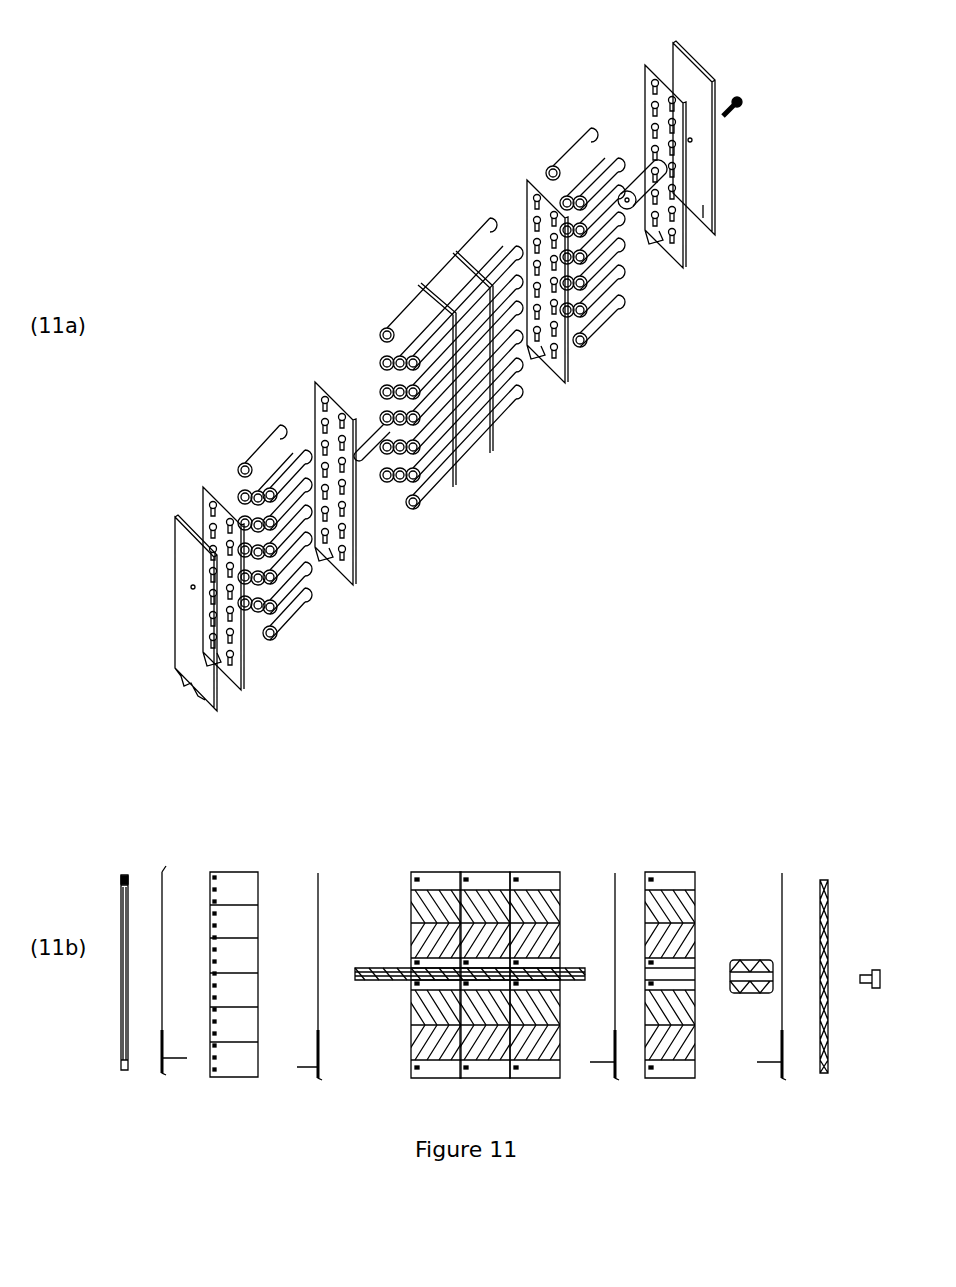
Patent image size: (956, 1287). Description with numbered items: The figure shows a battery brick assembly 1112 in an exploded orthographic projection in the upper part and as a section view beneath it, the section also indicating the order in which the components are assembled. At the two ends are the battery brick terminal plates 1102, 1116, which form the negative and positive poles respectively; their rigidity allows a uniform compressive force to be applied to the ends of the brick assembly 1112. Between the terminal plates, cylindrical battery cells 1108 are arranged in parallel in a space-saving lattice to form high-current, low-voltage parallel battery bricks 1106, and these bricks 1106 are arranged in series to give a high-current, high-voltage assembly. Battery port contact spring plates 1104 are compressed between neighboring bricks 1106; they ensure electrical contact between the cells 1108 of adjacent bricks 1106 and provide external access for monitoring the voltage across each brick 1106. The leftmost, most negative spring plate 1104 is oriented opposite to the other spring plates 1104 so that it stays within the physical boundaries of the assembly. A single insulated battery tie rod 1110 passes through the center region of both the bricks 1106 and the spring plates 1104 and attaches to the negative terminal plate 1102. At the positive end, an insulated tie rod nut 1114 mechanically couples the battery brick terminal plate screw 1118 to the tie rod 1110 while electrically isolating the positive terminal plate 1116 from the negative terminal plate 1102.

In FIG. 11A, the battery brick terminal plate 1102 is at (182, 663).
In FIG. 11B, the battery brick terminal plate 1102 is at (124, 872).
In FIG. 11A, the battery port contact spring plate 1104 is at (240, 683).
In FIG. 11B, the battery port contact spring plate 1104 is at (166, 866).
In FIG. 11A, the parallel battery brick 1106 is at (270, 668).
In FIG. 11B, the parallel battery brick 1106 is at (262, 795).
In FIG. 11A, the cylindrical battery cell 1108 is at (303, 617).
In FIG. 11B, the cylindrical battery cell 1108 is at (252, 882).
In FIG. 11A, the battery tie rod 1110 is at (377, 462).
In FIG. 11B, the battery tie rod 1110 is at (385, 965).
In FIG. 11A, the battery brick assembly 1112 is at (365, 252).
In FIG. 11A, the insulated tie rod nut 1114 is at (641, 225).
In FIG. 11B, the insulated tie rod nut 1114 is at (743, 965).
In FIG. 11A, the battery brick terminal plate 1116 is at (703, 213).
In FIG. 11B, the battery brick terminal plate 1116 is at (825, 880).
In FIG. 11A, the battery brick terminal plate screw 1118 is at (731, 105).
In FIG. 11B, the battery brick terminal plate screw 1118 is at (866, 975).